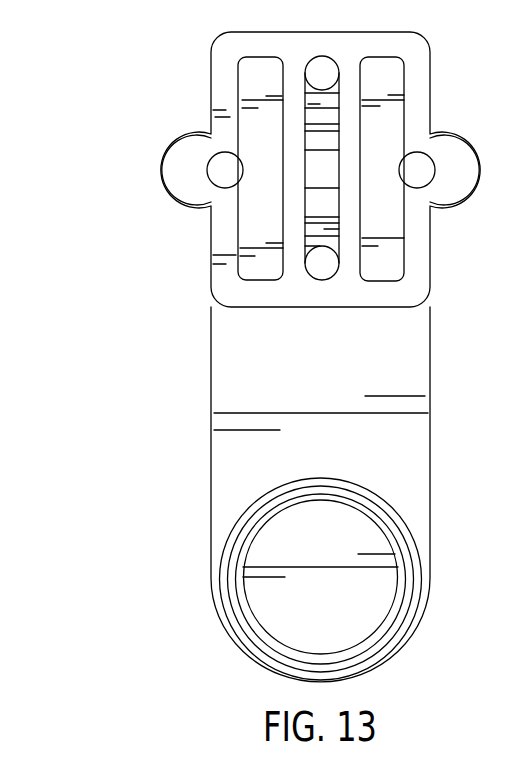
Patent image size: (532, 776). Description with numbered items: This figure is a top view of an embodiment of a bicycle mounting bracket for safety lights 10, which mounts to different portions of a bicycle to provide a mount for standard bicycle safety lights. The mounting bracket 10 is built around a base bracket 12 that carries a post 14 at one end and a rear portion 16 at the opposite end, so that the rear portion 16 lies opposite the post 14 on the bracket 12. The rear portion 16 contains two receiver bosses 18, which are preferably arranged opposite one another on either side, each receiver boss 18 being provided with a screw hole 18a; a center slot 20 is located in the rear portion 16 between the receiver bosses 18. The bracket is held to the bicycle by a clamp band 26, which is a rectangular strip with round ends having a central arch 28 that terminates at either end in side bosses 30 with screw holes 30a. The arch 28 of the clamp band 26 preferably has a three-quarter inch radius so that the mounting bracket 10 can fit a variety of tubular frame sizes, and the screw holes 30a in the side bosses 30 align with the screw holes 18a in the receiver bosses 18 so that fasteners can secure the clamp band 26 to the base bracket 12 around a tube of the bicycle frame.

The bicycle mounting bracket for safety lights 10 is at (293, 352).
The base bracket 12 is at (232, 393).
The post 14 is at (268, 588).
The rear portion 16 is at (227, 93).
The receiver boss 18 is at (302, 170).
The screw hole 18a is at (502, 172).
The center slot 20 is at (362, 93).
The clamp band 26 is at (403, 157).
The arch 28 is at (328, 167).
The side boss 30 is at (403, 157).
The screw hole 30a is at (322, 70).